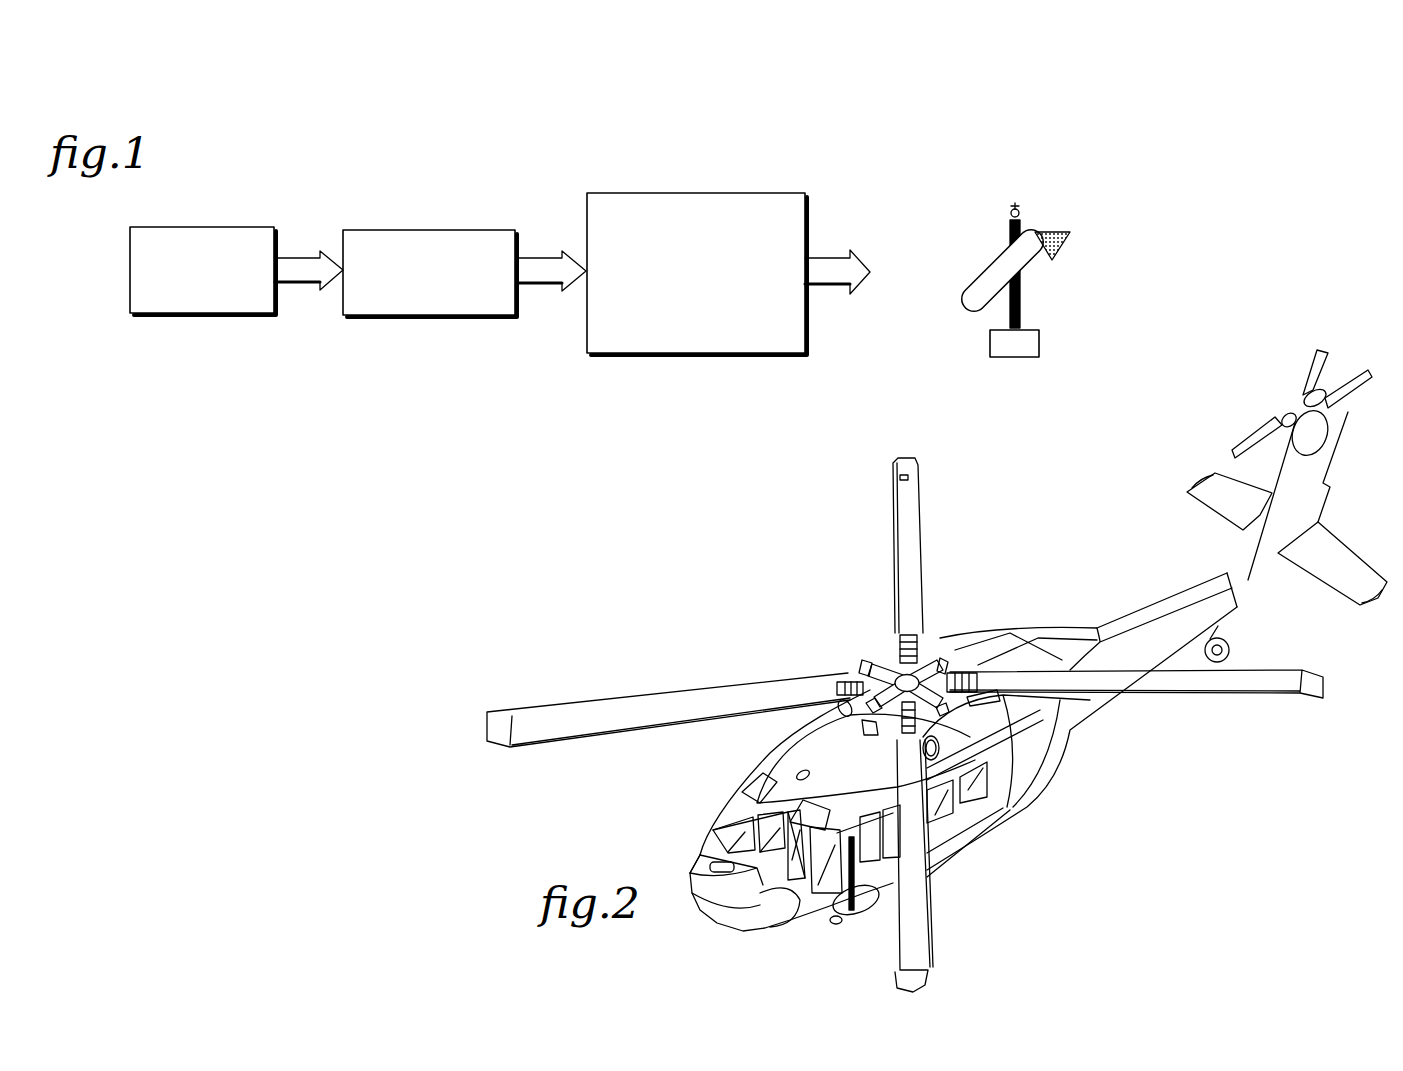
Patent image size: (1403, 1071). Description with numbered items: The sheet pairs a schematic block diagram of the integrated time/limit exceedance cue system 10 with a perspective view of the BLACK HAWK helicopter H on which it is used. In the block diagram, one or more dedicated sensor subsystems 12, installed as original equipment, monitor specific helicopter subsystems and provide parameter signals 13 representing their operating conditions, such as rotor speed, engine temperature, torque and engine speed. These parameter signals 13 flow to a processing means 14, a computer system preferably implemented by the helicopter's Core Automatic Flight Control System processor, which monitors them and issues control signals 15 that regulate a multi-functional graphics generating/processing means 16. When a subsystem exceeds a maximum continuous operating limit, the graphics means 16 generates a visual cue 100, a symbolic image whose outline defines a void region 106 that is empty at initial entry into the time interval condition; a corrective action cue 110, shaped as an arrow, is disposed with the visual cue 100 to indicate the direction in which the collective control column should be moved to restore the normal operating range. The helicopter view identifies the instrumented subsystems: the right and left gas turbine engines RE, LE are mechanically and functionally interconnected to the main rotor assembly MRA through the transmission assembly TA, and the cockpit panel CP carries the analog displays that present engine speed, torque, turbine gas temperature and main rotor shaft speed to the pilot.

In FIG. 1, the integrated time/limit exceedance cue system 10 is at (846, 171).
In FIG. 1, the dedicated sensor subsystems 12 is at (204, 223).
In FIG. 1, the parameter signals 13 is at (289, 256).
In FIG. 1, the processing means 14 is at (438, 229).
In FIG. 1, the control signals 15 is at (534, 257).
In FIG. 1, the multi-functional graphics generating/processing means 16 is at (726, 191).
In FIG. 1, the visual cue 100 is at (978, 261).
In FIG. 1, the void region 106 is at (1014, 280).
In FIG. 1, the corrective action cue 110 is at (1070, 227).
In FIG. 2, the helicopter H is at (688, 584).
In FIG. 2, the main rotor assembly MRA is at (878, 662).
In FIG. 2, the right gas turbine engine RE is at (838, 707).
In FIG. 2, the transmission assembly TA is at (862, 722).
In FIG. 2, the left gas turbine engine LE is at (921, 751).
In FIG. 2, the cockpit panel CP is at (790, 867).